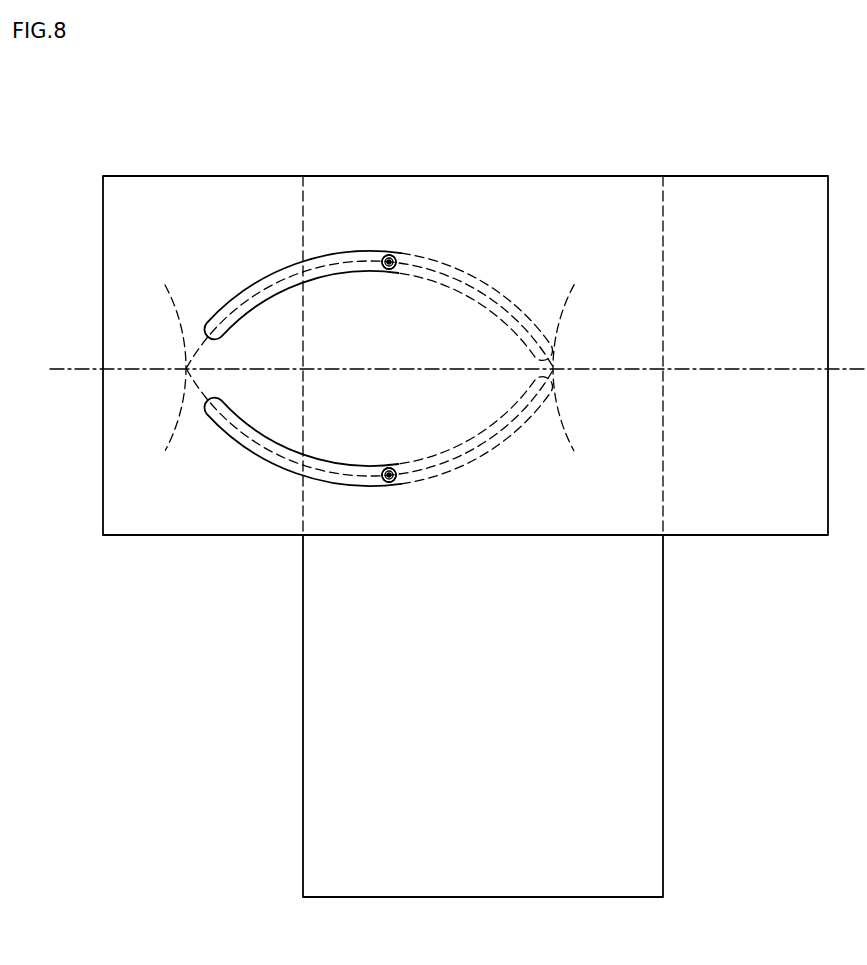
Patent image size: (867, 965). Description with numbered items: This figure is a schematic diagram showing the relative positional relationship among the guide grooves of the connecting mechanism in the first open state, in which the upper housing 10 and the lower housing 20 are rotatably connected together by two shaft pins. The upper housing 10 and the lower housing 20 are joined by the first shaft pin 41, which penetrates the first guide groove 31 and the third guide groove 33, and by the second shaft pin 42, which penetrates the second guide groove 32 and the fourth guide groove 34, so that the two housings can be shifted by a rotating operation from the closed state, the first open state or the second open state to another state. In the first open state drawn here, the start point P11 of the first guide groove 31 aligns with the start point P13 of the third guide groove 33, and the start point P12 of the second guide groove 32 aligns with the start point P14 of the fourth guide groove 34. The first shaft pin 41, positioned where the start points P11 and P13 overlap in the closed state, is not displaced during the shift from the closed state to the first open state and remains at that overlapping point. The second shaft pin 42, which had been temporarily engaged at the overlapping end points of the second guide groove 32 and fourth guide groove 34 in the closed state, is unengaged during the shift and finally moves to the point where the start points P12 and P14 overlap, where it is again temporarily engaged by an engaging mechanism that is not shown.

The upper housing 10 is at (736, 185).
The lower housing 20 is at (647, 808).
The first guide groove 31 is at (282, 468).
The second guide groove 32 is at (248, 282).
The third guide groove 33 is at (495, 455).
The fourth guide groove 34 is at (495, 280).
The first shaft pin 41 is at (386, 483).
The second shaft pin 42 is at (389, 254).
The start point of first guide groove P11 is at (386, 482).
The start point of second guide groove P12 is at (395, 256).
The start point of third guide groove P13 is at (318, 575).
The start point of fourth guide groove P14 is at (433, 195).